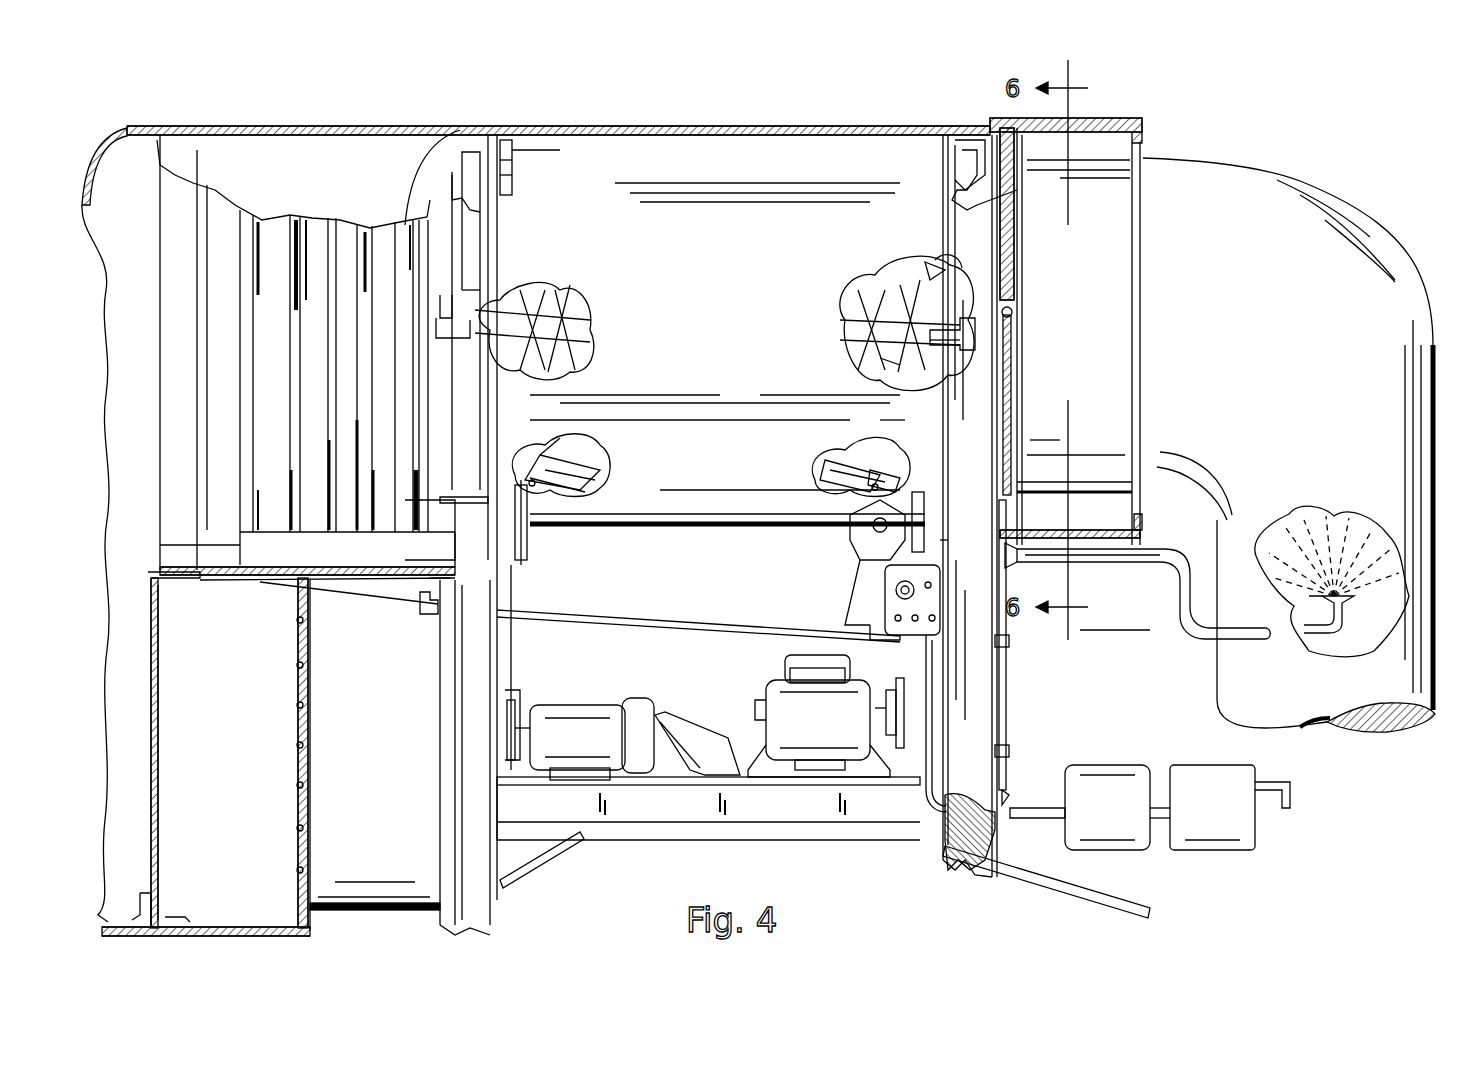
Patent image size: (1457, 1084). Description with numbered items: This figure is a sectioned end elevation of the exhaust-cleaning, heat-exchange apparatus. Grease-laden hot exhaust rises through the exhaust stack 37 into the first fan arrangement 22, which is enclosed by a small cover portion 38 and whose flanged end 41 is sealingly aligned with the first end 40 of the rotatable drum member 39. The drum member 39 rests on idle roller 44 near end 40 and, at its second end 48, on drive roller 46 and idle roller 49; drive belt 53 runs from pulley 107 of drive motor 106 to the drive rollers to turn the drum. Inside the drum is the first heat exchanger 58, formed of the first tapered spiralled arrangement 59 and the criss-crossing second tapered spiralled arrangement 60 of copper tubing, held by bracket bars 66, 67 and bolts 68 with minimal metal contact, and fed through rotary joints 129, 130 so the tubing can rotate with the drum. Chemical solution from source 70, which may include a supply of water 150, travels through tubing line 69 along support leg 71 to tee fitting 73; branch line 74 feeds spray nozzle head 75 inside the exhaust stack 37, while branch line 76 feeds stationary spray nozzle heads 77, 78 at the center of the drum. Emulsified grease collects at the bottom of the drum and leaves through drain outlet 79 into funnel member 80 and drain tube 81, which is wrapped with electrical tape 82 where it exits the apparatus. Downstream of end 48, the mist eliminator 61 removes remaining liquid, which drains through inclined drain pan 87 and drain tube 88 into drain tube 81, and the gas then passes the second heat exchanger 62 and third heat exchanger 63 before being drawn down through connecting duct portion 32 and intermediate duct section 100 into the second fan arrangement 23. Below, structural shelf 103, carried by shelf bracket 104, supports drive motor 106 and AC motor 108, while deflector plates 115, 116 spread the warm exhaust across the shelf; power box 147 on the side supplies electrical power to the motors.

The first fan arrangement 22 is at (1085, 320).
The second fan arrangement 23 is at (347, 700).
The connecting duct portion 32 is at (104, 476).
The exhaust stack 37 is at (1237, 673).
The cover portion 38 is at (1135, 120).
The drum member 39 is at (615, 180).
The first end 40 is at (968, 163).
The flanged end 41 is at (1030, 232).
The idle roller 44 is at (785, 522).
The drive roller 46 is at (530, 530).
The second end 48 is at (476, 160).
The idle roller 49 is at (502, 135).
The drive belt 53 is at (514, 560).
The first heat exchanger 58 is at (978, 300).
The first tapered spiralled arrangement 59 is at (950, 340).
The second tapered spiralled arrangement 60 is at (555, 295).
The mist eliminator 61 is at (258, 262).
The second heat exchanger 62 is at (215, 327).
The third heat exchanger 63 is at (170, 398).
The bracket bar 66 is at (878, 486).
The bracket bar 67 is at (592, 455).
The bolt 68 is at (568, 486).
The tubing line 69 is at (1004, 710).
The source of chemical solution 70 is at (1092, 782).
The support leg 71 is at (977, 690).
The tee fitting 73 is at (1015, 558).
The branch line 74 is at (1092, 558).
The spray nozzle head 75 is at (1336, 606).
The branch line 76 is at (1010, 318).
The spray nozzle head 77 is at (937, 265).
The spray nozzle head 78 is at (882, 357).
The drain outlet 79 is at (872, 524).
The funnel member 80 is at (882, 560).
The drain tube 81 is at (930, 762).
The electrical tape 82 is at (1110, 892).
The inclined drain pan 87 is at (372, 580).
The drain tube 88 is at (424, 607).
The intermediate duct section 100 is at (217, 695).
The structural shelf 103 is at (517, 742).
The shelf bracket 104 is at (762, 812).
The drive motor 106 is at (565, 716).
The pulley 107 is at (518, 735).
The AC motor 108 is at (834, 692).
The deflector plate 115 is at (515, 885).
The deflector plate 116 is at (675, 718).
The rotary joint 129 is at (965, 300).
The rotary joint 130 is at (463, 328).
The power box 147 is at (900, 575).
The supply of water 150 is at (1236, 850).